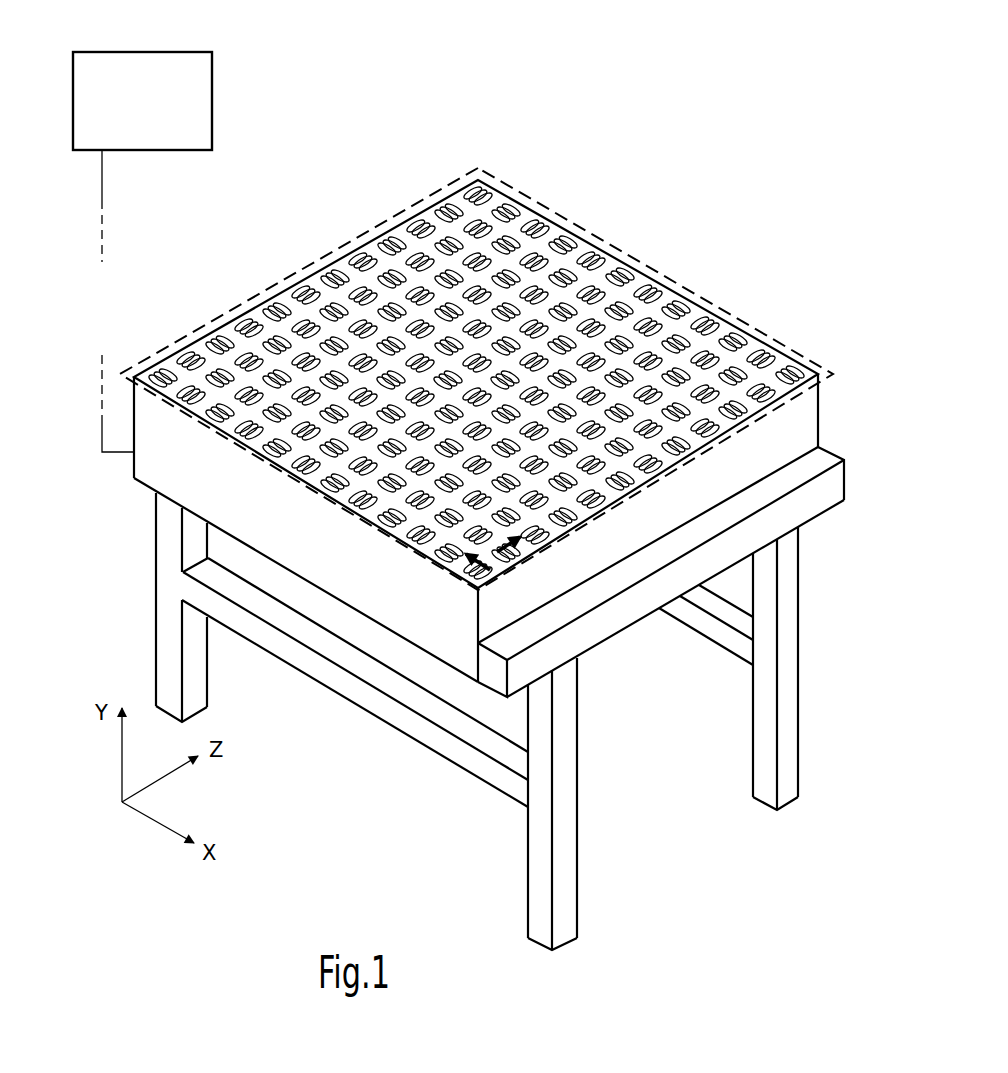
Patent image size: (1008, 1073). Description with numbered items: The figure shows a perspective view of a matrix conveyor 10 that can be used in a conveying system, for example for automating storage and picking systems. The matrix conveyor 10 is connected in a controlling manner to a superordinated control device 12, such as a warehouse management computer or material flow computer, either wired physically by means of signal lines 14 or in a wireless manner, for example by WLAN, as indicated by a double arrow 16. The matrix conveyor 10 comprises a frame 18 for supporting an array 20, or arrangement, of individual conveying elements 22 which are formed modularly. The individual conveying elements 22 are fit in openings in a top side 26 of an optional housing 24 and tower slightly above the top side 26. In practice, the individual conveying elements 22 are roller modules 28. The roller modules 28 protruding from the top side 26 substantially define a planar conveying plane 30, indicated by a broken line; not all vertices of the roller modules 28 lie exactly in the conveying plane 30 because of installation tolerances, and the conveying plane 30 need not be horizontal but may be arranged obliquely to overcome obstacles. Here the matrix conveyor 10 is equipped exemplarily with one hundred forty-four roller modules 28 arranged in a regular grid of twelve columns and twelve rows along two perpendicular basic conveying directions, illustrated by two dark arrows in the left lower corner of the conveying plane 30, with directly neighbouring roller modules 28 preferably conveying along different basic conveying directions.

The matrix conveyor 10 is at (665, 157).
The superordinated control device 12 is at (162, 108).
The signal lines 14 is at (103, 178).
The double arrow 16 is at (312, 143).
The frame 18 is at (582, 797).
The array 20 is at (672, 372).
The individual conveying elements 22 is at (796, 387).
The housing 24 is at (500, 698).
The top side 26 is at (536, 547).
The roller modules 28 is at (502, 395).
The conveying plane 30 is at (270, 285).